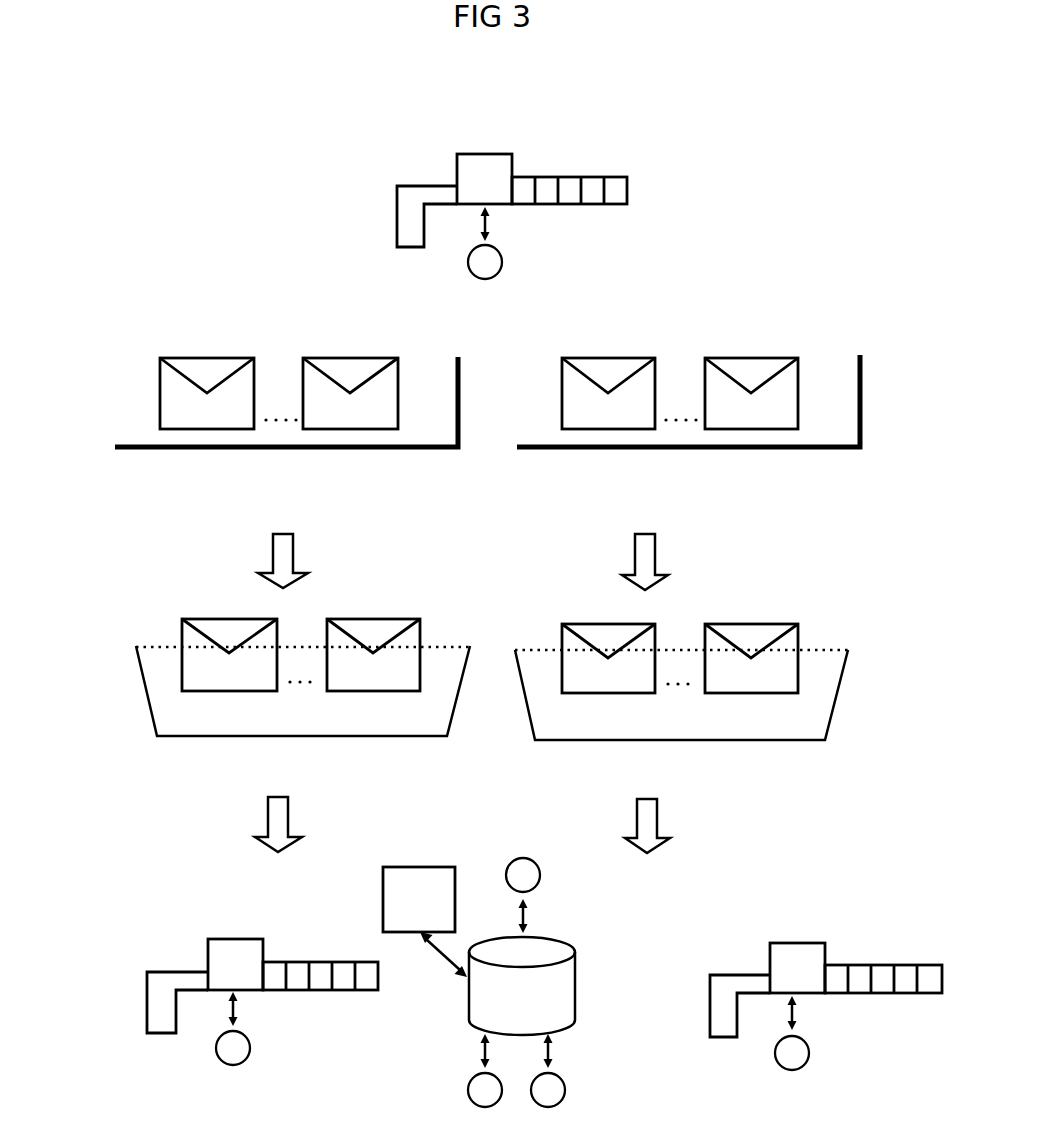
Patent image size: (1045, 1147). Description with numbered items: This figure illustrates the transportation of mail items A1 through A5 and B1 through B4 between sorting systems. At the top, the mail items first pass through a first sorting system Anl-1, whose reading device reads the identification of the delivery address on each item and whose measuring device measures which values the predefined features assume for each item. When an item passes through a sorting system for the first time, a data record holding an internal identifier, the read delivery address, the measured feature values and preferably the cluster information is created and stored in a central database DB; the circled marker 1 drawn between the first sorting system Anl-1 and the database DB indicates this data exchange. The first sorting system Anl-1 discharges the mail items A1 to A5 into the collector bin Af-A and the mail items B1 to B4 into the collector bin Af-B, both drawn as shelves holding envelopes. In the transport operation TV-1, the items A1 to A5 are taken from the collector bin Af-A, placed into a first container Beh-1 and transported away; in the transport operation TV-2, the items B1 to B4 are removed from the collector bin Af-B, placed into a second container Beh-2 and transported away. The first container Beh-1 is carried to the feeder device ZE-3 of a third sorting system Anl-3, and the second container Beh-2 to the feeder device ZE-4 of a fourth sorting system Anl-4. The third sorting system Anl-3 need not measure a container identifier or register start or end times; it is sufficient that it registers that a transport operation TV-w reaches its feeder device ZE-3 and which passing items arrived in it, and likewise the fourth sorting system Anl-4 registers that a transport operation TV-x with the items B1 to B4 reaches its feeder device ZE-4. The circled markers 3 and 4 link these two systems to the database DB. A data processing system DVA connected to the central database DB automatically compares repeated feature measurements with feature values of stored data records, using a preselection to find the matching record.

The first sorting system Anl-1 is at (442, 138).
The third sorting system Anl-3 is at (203, 966).
The fourth sorting system Anl-4 is at (764, 974).
The collector bin Af-A is at (548, 173).
The collector bin Af-B is at (593, 208).
The mail item A1 is at (218, 524).
The mail item A5 is at (361, 524).
The mail item B1 is at (608, 525).
The mail item B4 is at (751, 525).
The transport operation TV-1 is at (322, 561).
The transport operation TV-2 is at (684, 562).
The transport operation TV-w is at (320, 824).
The transport operation TV-x is at (686, 826).
The first container Beh-1 is at (378, 738).
The second container Beh-2 is at (723, 742).
The feeder device ZE-3 is at (143, 1000).
The feeder device ZE-4 is at (698, 1017).
The data processing system DVA is at (380, 927).
The central database DB is at (478, 1023).
The data link to installation 1 is at (504, 570).
The data link to installation 3 is at (359, 1049).
The data link to installation 4 is at (670, 1051).